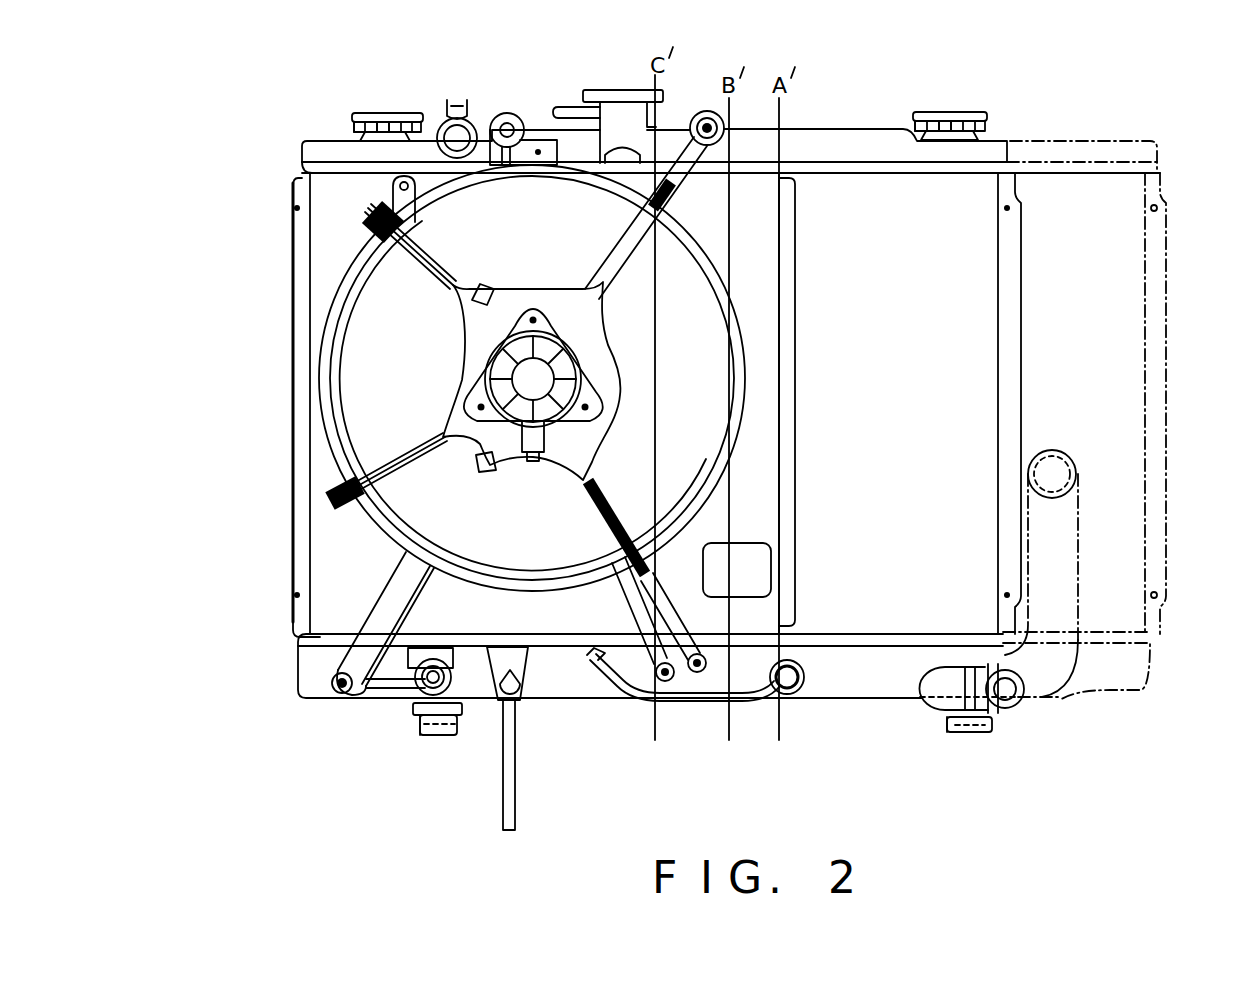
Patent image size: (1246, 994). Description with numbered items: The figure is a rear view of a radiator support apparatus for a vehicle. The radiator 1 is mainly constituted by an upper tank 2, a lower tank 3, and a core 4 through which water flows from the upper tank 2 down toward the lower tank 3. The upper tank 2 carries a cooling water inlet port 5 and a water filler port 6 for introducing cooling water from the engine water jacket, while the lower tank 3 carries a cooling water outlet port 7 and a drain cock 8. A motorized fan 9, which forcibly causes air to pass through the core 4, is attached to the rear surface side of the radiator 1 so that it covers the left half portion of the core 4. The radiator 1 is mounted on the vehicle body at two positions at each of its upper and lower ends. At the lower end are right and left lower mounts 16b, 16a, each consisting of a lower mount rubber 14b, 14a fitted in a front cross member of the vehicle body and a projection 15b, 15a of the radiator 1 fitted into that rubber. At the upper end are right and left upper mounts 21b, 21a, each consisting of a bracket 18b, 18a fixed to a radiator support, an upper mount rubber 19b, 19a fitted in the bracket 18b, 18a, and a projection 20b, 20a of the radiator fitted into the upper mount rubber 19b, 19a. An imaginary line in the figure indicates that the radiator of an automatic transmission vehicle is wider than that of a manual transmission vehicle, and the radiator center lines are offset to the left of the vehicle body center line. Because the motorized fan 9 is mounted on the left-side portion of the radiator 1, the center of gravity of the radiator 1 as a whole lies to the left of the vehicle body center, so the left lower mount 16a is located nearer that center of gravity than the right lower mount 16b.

The radiator 1 is at (250, 283).
The upper tank 2 is at (1097, 143).
The lower tank 3 is at (1087, 678).
The core 4 is at (1148, 414).
The cooling water inlet port 5 is at (463, 120).
The water filler port 6 is at (655, 92).
The cooling water outlet port 7 is at (1015, 704).
The drain cock 8 is at (518, 698).
The motorized fan 9 is at (340, 392).
The lower mount rubber 14a is at (428, 740).
The lower mount rubber 14b is at (964, 734).
The projection 15a is at (448, 740).
The projection 15b is at (978, 735).
The left lower mount 16a is at (411, 727).
The right lower mount 16b is at (947, 723).
The bracket 18a is at (362, 113).
The bracket 18b is at (918, 114).
The upper mount rubber 19a is at (407, 112).
The upper mount rubber 19b is at (968, 112).
The projection 20a is at (402, 103).
The projection 20b is at (950, 112).
The left upper mount 21a is at (408, 90).
The right upper mount 21b is at (957, 96).